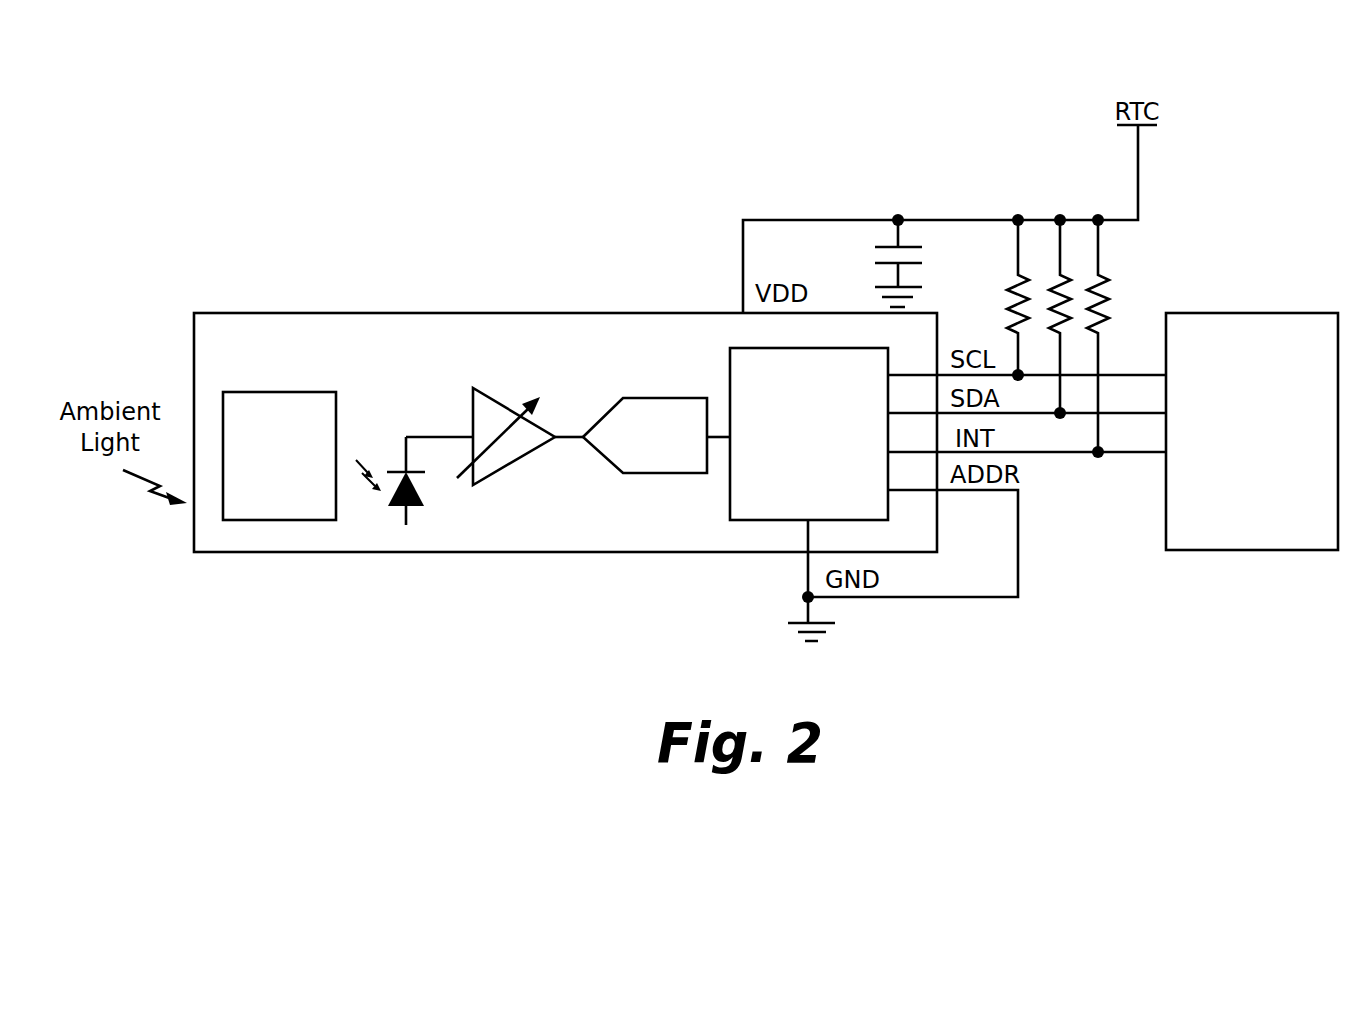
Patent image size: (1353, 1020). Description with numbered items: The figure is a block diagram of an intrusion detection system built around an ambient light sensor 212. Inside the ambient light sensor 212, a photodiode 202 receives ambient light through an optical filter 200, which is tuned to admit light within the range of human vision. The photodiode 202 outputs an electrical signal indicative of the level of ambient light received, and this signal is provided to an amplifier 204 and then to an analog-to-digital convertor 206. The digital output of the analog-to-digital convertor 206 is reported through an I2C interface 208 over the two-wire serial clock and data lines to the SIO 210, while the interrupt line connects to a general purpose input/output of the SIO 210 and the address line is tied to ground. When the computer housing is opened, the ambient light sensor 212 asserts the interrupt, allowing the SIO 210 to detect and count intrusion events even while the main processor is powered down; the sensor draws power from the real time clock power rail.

The optical filter 200 is at (255, 420).
The photodiode 202 is at (395, 508).
The amplifier 204 is at (490, 430).
The analog-to-digital convertor 206 is at (652, 458).
The I2C interface 208 is at (809, 434).
The SIO 210 is at (1252, 431).
The ambient light sensor 212 is at (380, 297).